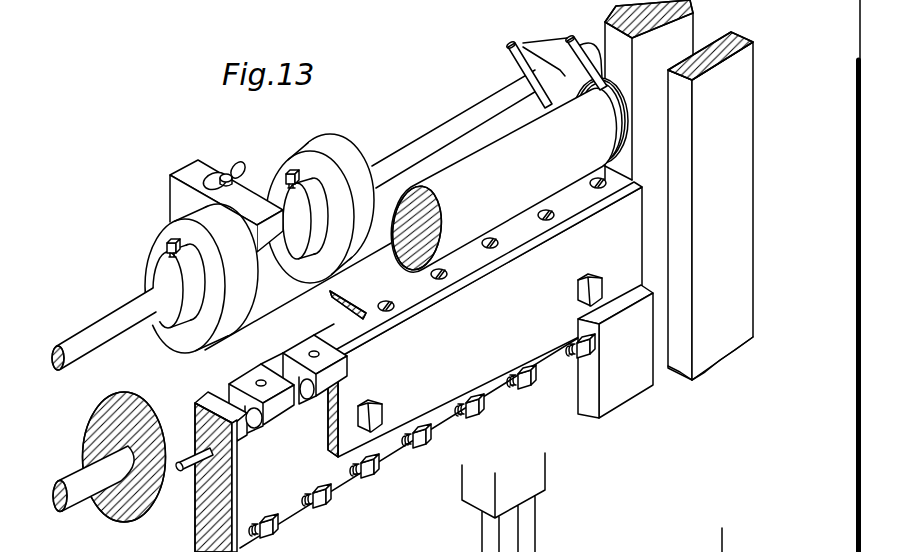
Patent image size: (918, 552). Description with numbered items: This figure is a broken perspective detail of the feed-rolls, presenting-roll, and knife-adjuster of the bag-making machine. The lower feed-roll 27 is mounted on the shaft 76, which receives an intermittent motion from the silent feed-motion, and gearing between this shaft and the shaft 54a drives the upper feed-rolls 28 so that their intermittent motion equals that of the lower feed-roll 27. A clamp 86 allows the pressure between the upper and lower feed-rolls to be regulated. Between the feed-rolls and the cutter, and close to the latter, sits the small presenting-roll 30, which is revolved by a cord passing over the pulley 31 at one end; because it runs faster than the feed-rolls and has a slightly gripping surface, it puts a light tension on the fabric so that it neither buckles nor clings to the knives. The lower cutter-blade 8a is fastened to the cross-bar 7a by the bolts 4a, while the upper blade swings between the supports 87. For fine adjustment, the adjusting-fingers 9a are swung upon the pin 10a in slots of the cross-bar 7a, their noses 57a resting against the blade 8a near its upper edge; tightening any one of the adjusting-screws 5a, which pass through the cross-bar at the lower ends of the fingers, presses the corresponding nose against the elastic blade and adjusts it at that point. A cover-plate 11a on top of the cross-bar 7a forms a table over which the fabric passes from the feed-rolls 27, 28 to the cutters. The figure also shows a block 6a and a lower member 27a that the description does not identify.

The clamp 86 is at (175, 187).
The upper feed-rolls 28 is at (213, 243).
The lower feed-roll 27 is at (98, 410).
The shaft 76 is at (77, 497).
The pin 10a is at (188, 463).
The adjusting-fingers 9a is at (222, 392).
The noses 57a is at (258, 430).
The cover-plate 11a is at (418, 264).
The lower cutter-blade 8a is at (485, 319).
The bolts 4a is at (596, 279).
The adjusting-screws 5a is at (580, 352).
The end block 6a is at (615, 351).
The cross-bar 7a is at (497, 516).
The presenting-roll 30 is at (502, 154).
The pulley 31 is at (622, 110).
The shaft 54a is at (463, 118).
The supports 87 is at (687, 37).
The channel support 27a is at (503, 547).